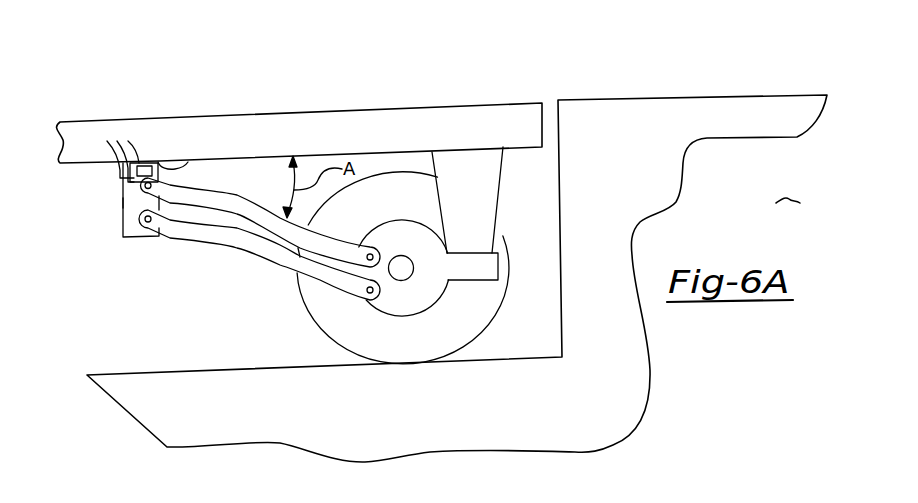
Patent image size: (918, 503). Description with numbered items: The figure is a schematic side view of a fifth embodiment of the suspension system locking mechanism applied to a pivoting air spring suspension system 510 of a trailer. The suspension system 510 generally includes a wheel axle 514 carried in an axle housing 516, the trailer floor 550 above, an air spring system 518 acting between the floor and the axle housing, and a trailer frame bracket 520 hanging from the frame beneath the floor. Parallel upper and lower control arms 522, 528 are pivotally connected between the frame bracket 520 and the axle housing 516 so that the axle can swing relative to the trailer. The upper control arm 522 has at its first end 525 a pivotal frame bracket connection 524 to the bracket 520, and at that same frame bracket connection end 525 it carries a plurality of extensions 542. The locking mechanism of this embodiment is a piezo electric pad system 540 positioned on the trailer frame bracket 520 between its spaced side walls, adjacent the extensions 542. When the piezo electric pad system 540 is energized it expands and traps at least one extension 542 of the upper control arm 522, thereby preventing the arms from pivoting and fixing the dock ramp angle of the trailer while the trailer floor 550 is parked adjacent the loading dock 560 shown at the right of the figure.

The pivoting air spring suspension system 510 is at (215, 341).
The wheel axle 514 is at (403, 305).
The axle housing 516 is at (420, 268).
The air spring system 518 is at (517, 200).
The trailer frame bracket 520 is at (133, 232).
The upper control arm 522 is at (261, 197).
The pivotal frame bracket connection 524 is at (193, 174).
The first end 525 is at (78, 211).
The lower control arm 528 is at (259, 255).
The piezo electric pad system 540 is at (207, 143).
The extensions 542 is at (115, 152).
The trailer floor 550 is at (299, 108).
The loading dock 560 is at (457, 278).